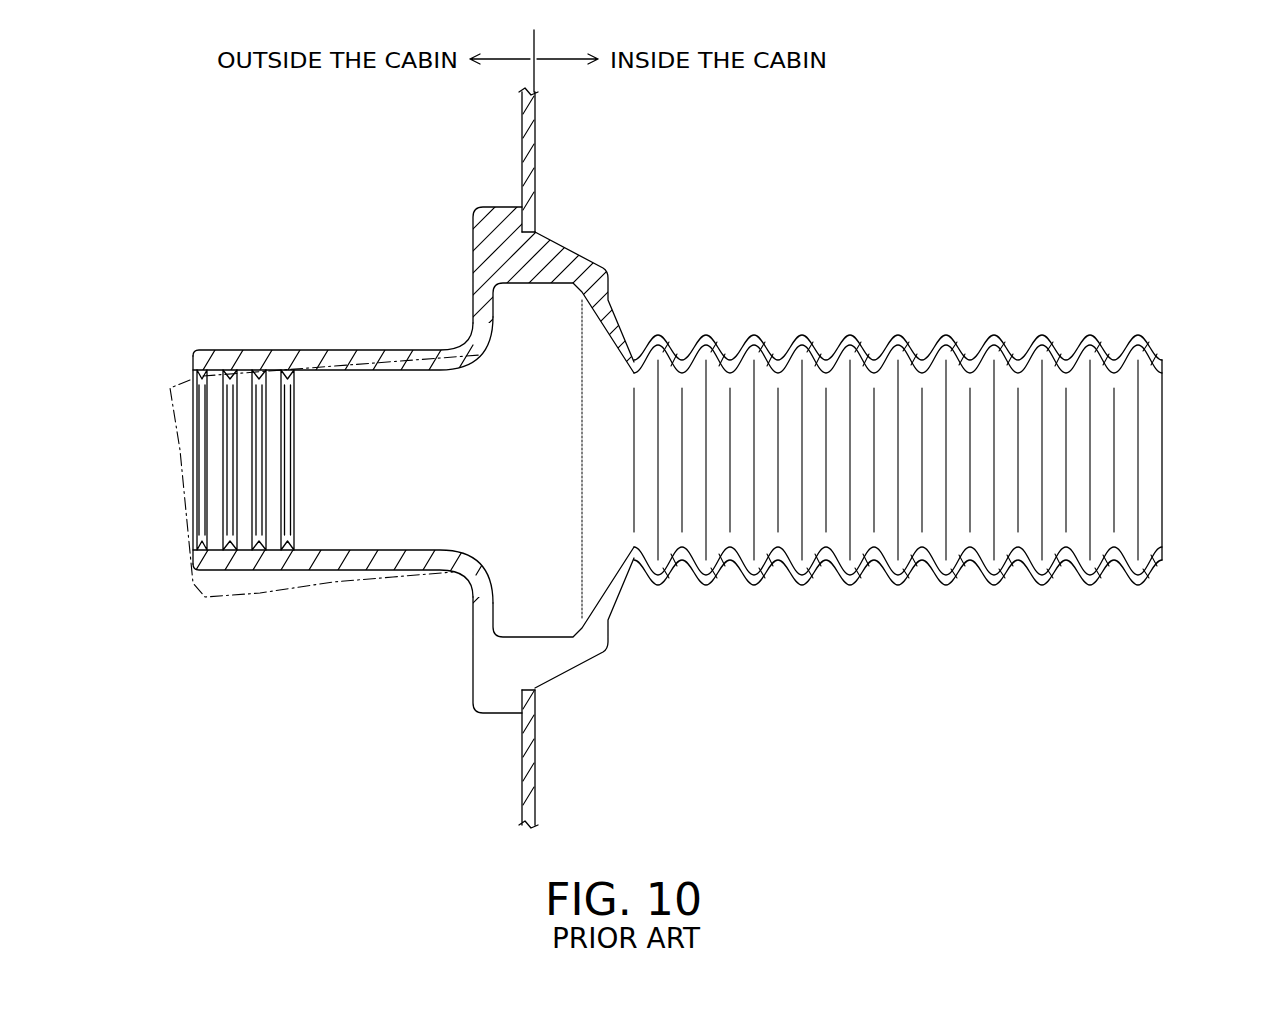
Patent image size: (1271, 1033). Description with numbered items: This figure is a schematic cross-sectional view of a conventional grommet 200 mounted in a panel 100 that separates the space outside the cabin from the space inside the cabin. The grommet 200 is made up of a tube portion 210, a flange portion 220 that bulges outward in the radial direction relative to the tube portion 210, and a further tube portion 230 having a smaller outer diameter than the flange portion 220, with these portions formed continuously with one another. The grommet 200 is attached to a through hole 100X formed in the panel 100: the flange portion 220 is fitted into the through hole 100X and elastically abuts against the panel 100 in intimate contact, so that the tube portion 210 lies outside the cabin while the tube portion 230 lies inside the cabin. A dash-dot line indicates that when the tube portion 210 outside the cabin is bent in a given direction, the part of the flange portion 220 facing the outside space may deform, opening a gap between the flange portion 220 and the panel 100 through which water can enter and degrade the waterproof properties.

The grommet 200 is at (1212, 141).
The tube portion 210 is at (262, 352).
The flange portion 220 is at (500, 207).
The tube portion 230 is at (803, 338).
The panel 100 is at (535, 127).
The through hole 100X is at (536, 237).